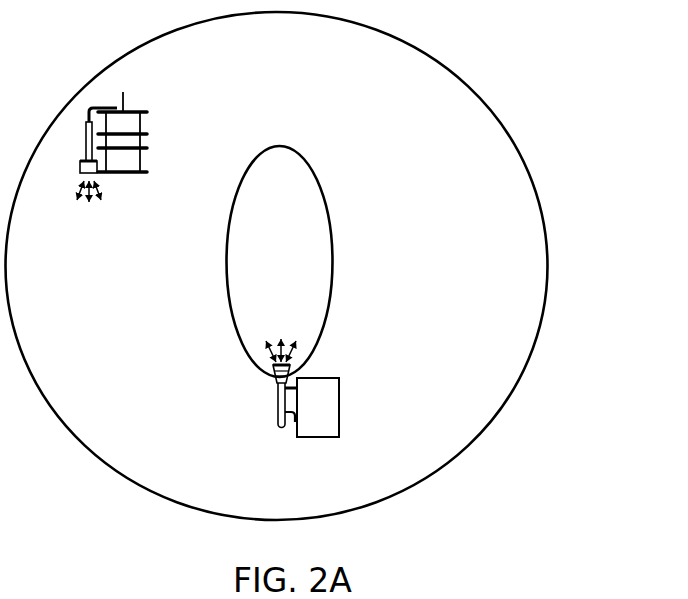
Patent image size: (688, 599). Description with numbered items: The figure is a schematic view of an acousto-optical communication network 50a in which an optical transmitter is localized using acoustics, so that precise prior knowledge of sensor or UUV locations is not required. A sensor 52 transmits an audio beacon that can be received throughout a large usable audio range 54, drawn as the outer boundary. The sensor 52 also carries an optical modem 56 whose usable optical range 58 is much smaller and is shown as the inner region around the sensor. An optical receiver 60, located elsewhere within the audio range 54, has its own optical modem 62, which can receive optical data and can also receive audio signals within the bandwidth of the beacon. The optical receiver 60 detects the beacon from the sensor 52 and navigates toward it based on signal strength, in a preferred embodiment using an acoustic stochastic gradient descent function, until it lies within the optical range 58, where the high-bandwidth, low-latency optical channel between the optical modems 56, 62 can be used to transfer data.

The sprinkler system layout 50a is at (579, 52).
The sensor 52 is at (342, 410).
The usable audio range 54 is at (432, 57).
The optical modem 56 is at (272, 378).
The usable optical range 58 is at (310, 166).
The optical receiver 60 is at (141, 122).
The optical modem 62 is at (82, 162).